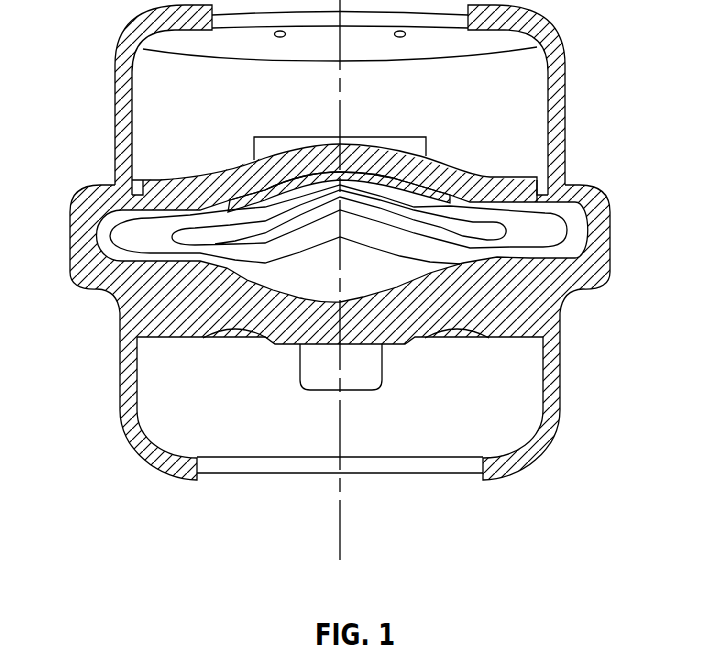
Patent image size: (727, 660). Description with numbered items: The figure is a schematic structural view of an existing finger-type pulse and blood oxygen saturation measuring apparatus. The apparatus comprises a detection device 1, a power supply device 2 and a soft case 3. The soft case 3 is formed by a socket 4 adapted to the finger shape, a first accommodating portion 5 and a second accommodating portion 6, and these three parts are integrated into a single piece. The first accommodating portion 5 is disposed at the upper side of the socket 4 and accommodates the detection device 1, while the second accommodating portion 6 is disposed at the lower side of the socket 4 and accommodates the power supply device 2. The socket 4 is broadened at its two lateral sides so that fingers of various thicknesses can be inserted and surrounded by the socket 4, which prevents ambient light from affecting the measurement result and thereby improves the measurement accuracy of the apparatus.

The detection device 1 is at (157, 108).
The power supply device 2 is at (498, 410).
The soft case 3 is at (558, 57).
The socket 4 is at (312, 276).
The first accommodating portion 5 is at (513, 112).
The second accommodating portion 6 is at (158, 436).